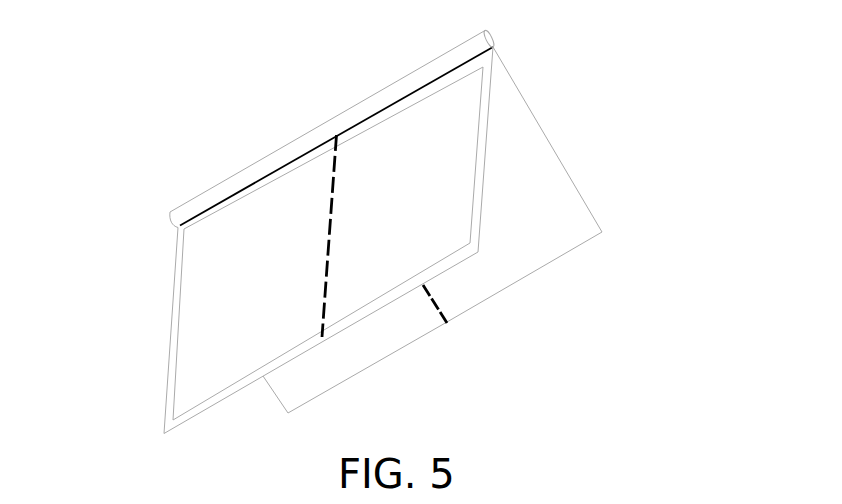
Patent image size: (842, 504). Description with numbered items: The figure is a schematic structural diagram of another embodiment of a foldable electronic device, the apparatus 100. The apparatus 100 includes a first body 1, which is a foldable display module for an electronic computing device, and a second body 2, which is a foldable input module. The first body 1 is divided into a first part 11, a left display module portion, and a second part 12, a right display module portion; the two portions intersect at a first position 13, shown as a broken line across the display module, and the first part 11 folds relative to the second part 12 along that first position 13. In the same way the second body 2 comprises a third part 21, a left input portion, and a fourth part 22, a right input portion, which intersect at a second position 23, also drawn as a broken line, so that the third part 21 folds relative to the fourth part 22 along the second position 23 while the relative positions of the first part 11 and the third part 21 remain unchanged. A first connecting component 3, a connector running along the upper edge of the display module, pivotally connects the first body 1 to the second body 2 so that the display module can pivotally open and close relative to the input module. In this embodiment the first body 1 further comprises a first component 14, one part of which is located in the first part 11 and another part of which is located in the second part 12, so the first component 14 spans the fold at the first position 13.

The apparatus 100 is at (98, 44).
The first body 1 is at (80, 277).
The first part 11 is at (235, 252).
The second part 12 is at (363, 278).
The first position 13 is at (335, 172).
The first component 14 is at (302, 205).
The second body 2 is at (705, 167).
The third part 21 is at (380, 317).
The fourth part 22 is at (508, 195).
The second position 23 is at (440, 310).
The first connecting component 3 is at (430, 72).